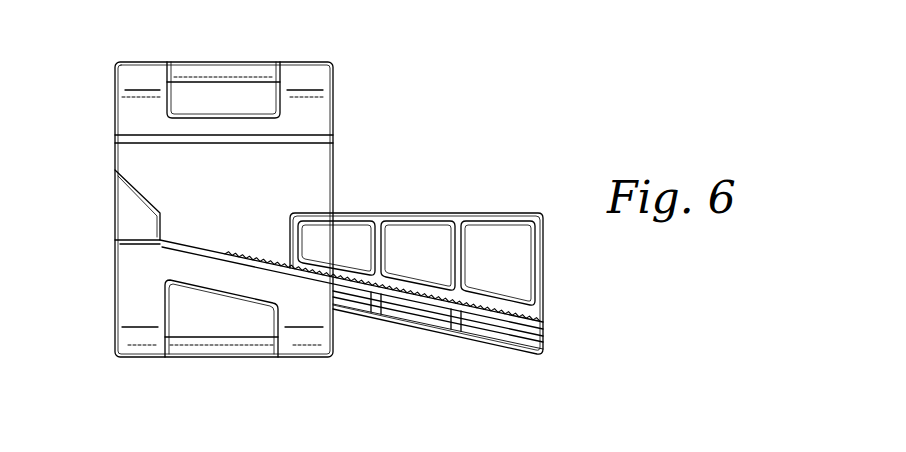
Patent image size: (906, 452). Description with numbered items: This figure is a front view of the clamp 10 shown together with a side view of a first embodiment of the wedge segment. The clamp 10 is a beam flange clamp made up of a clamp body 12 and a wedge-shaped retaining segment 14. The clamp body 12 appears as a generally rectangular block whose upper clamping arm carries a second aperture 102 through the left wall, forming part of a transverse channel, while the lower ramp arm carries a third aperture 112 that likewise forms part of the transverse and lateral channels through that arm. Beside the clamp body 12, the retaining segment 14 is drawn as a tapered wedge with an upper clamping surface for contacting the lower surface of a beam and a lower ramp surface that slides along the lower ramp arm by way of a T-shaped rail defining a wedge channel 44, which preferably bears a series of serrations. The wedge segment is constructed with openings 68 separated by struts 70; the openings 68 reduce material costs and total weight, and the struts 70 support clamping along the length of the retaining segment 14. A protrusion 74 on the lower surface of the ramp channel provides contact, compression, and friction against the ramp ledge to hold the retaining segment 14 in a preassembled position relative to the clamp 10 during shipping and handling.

The clamp 10 is at (382, 106).
The clamp body 12 is at (142, 60).
The retaining segment 14 is at (500, 213).
The wedge channel 44 is at (530, 355).
The openings 68 is at (485, 255).
The struts 70 is at (470, 277).
The protrusion 74 is at (153, 143).
The second aperture 102 is at (228, 100).
The third aperture 112 is at (222, 323).